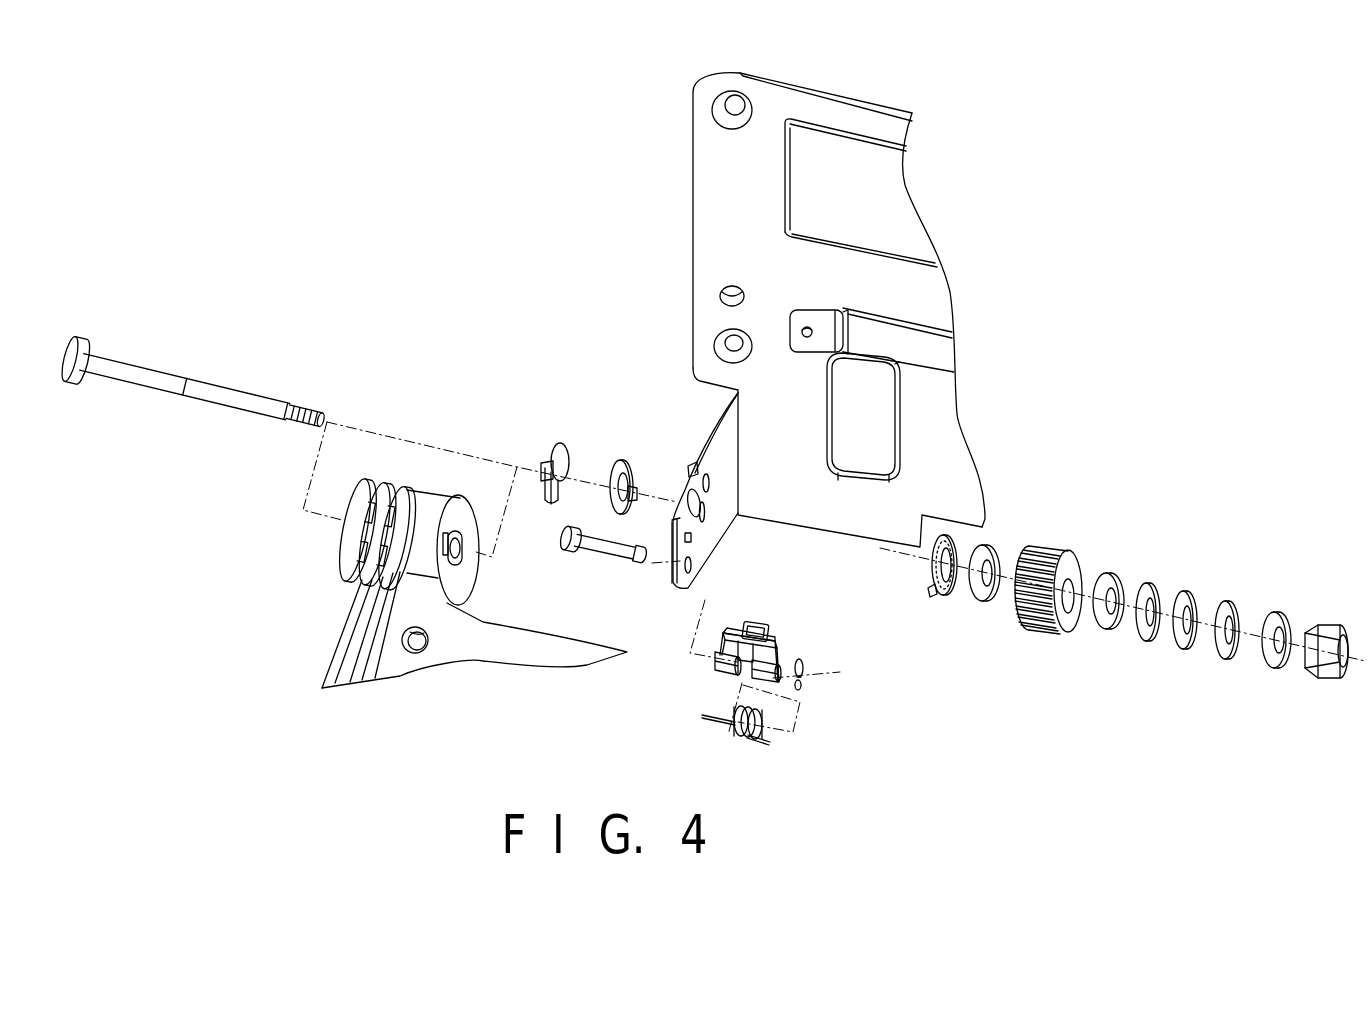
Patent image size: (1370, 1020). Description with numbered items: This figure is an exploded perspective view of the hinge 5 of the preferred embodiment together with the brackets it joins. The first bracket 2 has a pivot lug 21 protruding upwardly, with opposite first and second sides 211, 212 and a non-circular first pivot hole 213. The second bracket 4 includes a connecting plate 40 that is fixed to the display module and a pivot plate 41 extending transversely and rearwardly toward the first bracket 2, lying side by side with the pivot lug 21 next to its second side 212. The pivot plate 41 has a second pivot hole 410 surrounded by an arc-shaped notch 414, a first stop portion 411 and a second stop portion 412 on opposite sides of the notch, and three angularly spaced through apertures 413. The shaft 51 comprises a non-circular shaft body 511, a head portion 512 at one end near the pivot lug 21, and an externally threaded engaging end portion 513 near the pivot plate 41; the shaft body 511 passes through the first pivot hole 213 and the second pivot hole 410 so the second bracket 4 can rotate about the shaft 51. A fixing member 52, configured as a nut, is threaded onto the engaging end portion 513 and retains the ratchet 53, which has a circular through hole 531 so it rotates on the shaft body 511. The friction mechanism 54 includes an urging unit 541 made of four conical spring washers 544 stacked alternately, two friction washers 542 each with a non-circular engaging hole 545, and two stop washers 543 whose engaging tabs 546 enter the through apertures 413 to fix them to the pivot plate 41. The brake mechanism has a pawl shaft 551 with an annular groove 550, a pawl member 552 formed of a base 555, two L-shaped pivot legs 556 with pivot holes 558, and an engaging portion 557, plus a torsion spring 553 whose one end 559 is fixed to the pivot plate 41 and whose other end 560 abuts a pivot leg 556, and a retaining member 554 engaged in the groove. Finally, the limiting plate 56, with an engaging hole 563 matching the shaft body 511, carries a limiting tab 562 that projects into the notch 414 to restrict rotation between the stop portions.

The first bracket 2 is at (453, 546).
The pivot lug 21 is at (415, 502).
The first side 211 is at (377, 534).
The second side 212 is at (455, 548).
The first pivot hole 213 is at (427, 532).
The second bracket 4 is at (803, 362).
The connecting plate 40 is at (717, 181).
The pivot plate 41 is at (726, 487).
The second pivot hole 410 is at (697, 495).
The first stop portion 411 is at (697, 465).
The second stop portion 412 is at (680, 580).
The through aperture 413 is at (709, 481).
The arc-shaped notch 414 is at (692, 470).
The hinge 5 is at (605, 360).
The shaft 51 is at (194, 361).
The shaft body 511 is at (185, 387).
The head portion 512 is at (76, 360).
The engaging end portion 513 is at (305, 416).
The fixing member 52 is at (1320, 626).
The ratchet 53 is at (1044, 623).
The circular through hole 531 is at (1069, 610).
The friction mechanism 54 is at (1123, 560).
The urging unit 541 is at (1278, 595).
The friction washer 542 is at (1106, 572).
The stop washer 543 is at (620, 462).
The conical spring washer 544 is at (1274, 614).
The engaging hole 545 is at (987, 586).
The engaging tab 546 is at (632, 496).
The annular groove 550 is at (640, 554).
The pawl shaft 551 is at (603, 577).
The pawl member 552 is at (768, 630).
The torsion spring 553 is at (750, 735).
The retaining member 554 is at (802, 686).
The base 555 is at (764, 621).
The pivot leg 556 is at (682, 676).
The engaging portion 557 is at (755, 625).
The pivot hole 558 is at (725, 665).
The one end 559 is at (717, 722).
The other end 560 is at (763, 738).
The limiting plate 56 is at (557, 454).
The limiting tab 562 is at (548, 500).
The engaging hole 563 is at (565, 460).